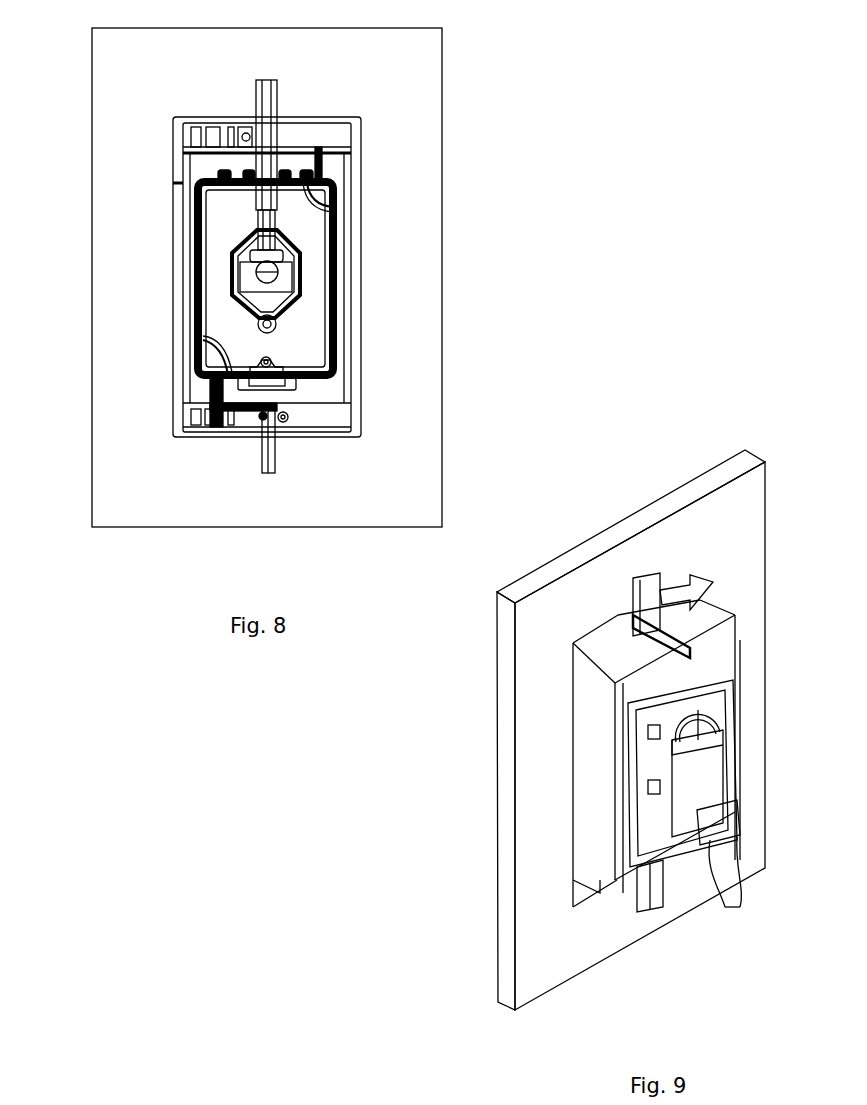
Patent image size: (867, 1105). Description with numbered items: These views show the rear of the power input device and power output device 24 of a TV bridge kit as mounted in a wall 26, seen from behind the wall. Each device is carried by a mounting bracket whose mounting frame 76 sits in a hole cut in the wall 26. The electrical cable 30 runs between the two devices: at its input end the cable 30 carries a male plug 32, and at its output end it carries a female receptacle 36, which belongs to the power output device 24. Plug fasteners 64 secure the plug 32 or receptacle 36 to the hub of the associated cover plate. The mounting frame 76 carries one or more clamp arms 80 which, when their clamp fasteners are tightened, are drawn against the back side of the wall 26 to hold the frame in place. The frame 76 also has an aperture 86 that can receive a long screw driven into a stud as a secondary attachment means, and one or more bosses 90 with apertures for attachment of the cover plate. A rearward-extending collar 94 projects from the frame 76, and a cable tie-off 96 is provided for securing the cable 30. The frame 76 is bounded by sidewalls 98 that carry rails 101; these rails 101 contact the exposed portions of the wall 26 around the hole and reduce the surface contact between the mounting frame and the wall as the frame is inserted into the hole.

In FIG. 8, the power output device 24 is at (405, 159).
In FIG. 9, the power output device 24 is at (548, 692).
In FIG. 8, the wall 26 is at (146, 295).
In FIG. 9, the wall 26 is at (742, 531).
In FIG. 8, the electrical cable 30 is at (277, 90).
In FIG. 8, the male plug 32 is at (300, 265).
In FIG. 9, the female receptacle 36 is at (737, 775).
In FIG. 9, the plug fasteners 64 is at (738, 706).
In FIG. 8, the mounting frame 76 is at (361, 394).
In FIG. 8, the clamp arms 80 is at (278, 458).
In FIG. 9, the clamp arms 80 is at (655, 590).
In FIG. 8, the aperture 86 is at (221, 427).
In FIG. 8, the bosses 90 is at (266, 367).
In FIG. 8, the rearward-extending collar 94 is at (337, 327).
In FIG. 8, the cable tie-off 96 is at (222, 355).
In FIG. 9, the sidewalls 98 is at (590, 770).
In FIG. 8, the rails 101 is at (173, 186).